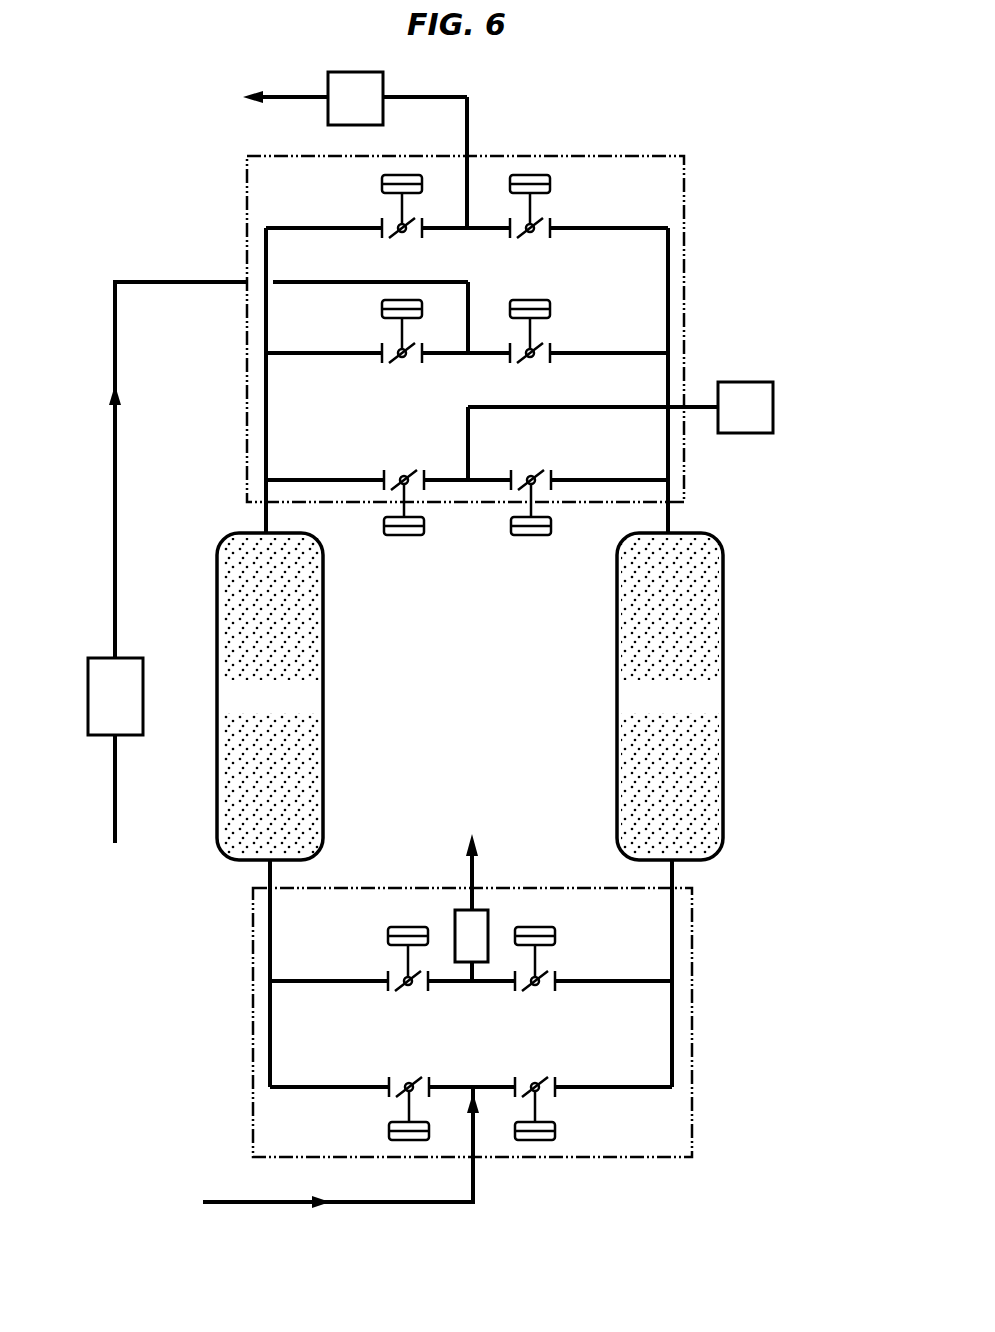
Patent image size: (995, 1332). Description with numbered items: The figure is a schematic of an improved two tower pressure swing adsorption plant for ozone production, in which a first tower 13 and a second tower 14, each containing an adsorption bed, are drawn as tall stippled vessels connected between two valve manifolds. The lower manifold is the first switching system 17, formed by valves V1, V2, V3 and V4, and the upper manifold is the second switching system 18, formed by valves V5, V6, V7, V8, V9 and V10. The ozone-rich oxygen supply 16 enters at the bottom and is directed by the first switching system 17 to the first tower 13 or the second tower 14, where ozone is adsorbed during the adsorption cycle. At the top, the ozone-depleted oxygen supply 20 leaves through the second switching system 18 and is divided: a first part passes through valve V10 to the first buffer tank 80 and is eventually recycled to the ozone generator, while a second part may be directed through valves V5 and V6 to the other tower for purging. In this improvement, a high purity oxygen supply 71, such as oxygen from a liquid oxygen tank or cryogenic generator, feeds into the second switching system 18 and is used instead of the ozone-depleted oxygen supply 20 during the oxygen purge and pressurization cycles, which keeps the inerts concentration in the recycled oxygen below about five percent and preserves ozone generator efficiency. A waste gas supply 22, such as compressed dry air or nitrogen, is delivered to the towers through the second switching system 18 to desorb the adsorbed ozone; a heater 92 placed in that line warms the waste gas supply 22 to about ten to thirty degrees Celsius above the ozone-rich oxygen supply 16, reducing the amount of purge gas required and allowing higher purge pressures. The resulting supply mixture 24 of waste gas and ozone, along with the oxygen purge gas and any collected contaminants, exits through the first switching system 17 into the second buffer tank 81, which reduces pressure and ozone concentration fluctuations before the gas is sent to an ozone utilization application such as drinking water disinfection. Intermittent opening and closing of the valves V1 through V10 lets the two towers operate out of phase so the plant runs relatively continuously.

The first tower 13 is at (223, 857).
The second tower 14 is at (718, 857).
The ozone-rich oxygen supply 16 is at (228, 1203).
The first switching system 17 is at (692, 1058).
The second switching system 18 is at (684, 248).
The ozone-depleted oxygen supply 20 is at (469, 122).
The waste gas supply 22 is at (192, 282).
The supply mixture of waste gas and ozone 24 is at (474, 866).
The high purity oxygen supply 71 is at (773, 408).
The first buffer tank 80 is at (341, 72).
The second buffer tank 81 is at (455, 921).
The heater 92 is at (88, 683).
The valve V1 is at (409, 1094).
The valve V2 is at (535, 1094).
The valve V3 is at (408, 975).
The valve V4 is at (535, 975).
The valve V5 is at (404, 489).
The valve V6 is at (531, 489).
The valve V7 is at (402, 348).
The valve V8 is at (530, 348).
The valve V9 is at (402, 223).
The valve V10 is at (530, 223).